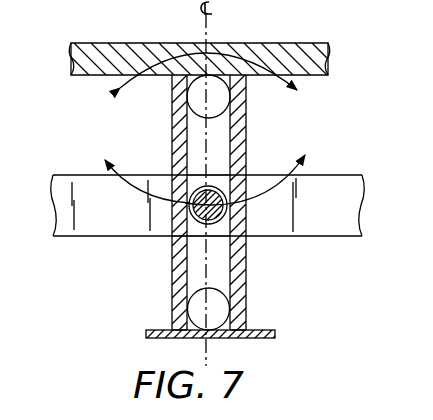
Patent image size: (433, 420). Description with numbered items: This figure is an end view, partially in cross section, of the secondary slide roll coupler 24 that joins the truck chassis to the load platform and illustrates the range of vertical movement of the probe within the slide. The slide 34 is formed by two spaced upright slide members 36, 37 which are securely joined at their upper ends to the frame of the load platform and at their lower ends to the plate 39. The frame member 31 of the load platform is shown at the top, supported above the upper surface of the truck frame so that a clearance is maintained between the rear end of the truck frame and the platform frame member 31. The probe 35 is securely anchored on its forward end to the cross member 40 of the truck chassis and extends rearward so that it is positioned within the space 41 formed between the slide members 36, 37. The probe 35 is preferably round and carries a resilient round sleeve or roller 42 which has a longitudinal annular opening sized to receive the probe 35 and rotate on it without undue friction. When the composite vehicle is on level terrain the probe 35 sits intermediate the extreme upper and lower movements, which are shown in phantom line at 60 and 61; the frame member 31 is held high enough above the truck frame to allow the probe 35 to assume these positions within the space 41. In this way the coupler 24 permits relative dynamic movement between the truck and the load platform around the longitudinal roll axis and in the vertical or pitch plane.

The secondary slide roll coupler 24 is at (247, 161).
The frame member 31 is at (128, 53).
The slide 34 is at (173, 280).
The probe 35 is at (180, 247).
The upright slide member 36 is at (245, 314).
The upright slide member 37 is at (173, 308).
The plate 39 is at (263, 338).
The cross member 40 is at (343, 211).
The space 41 is at (218, 263).
The resilient round sleeve or roller 42 is at (189, 203).
The phantom line position of probe 60 is at (190, 107).
The phantom line position of probe 61 is at (215, 338).